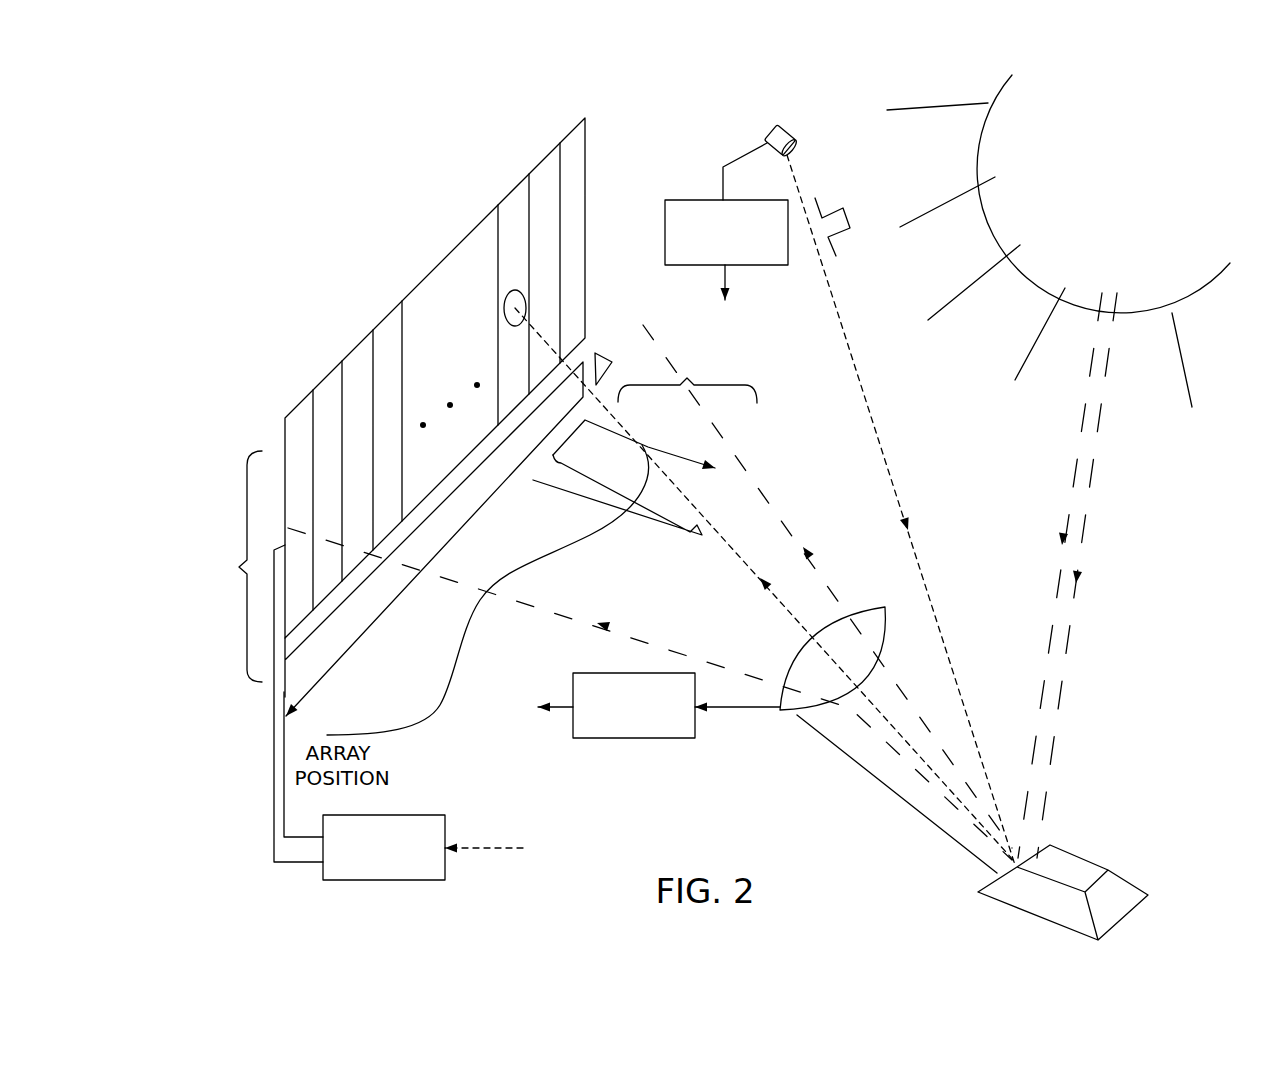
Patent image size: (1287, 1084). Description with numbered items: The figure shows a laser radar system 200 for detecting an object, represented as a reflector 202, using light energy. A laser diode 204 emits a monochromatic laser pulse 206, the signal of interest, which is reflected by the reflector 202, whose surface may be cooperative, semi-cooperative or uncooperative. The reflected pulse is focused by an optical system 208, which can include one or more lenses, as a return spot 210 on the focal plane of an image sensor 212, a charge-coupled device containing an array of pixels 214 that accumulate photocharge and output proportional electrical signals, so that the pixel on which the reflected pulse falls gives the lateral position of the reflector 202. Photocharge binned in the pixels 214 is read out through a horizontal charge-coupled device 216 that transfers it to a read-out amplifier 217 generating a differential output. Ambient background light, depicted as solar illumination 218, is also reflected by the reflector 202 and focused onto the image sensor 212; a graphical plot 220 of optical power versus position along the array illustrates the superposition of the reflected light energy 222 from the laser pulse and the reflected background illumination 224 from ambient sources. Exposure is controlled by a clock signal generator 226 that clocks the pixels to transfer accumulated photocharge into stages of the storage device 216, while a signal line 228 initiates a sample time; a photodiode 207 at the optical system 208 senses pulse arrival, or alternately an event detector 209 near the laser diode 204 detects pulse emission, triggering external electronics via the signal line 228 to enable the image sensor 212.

The laser radar system 200 is at (523, 680).
The reflector 202 is at (1088, 857).
The laser diode 204 is at (780, 125).
The monochromatic laser pulse 206 is at (852, 236).
The photodiode 207 is at (637, 738).
The optical system 208 is at (780, 713).
The event detector 209 is at (697, 200).
The return spot 210 is at (515, 291).
The image sensor 212 is at (227, 566).
The array of pixels 214 is at (572, 187).
The horizontal charge-coupled device 216 is at (347, 615).
The read-out amplifier 217 is at (600, 353).
The solar illumination 218 is at (1058, 466).
The graphical plot 220 is at (687, 377).
The reflected light energy 222 is at (689, 492).
The reflected background illumination 224 is at (610, 532).
The clock signal generator 226 is at (447, 865).
The signal line 228 is at (283, 795).